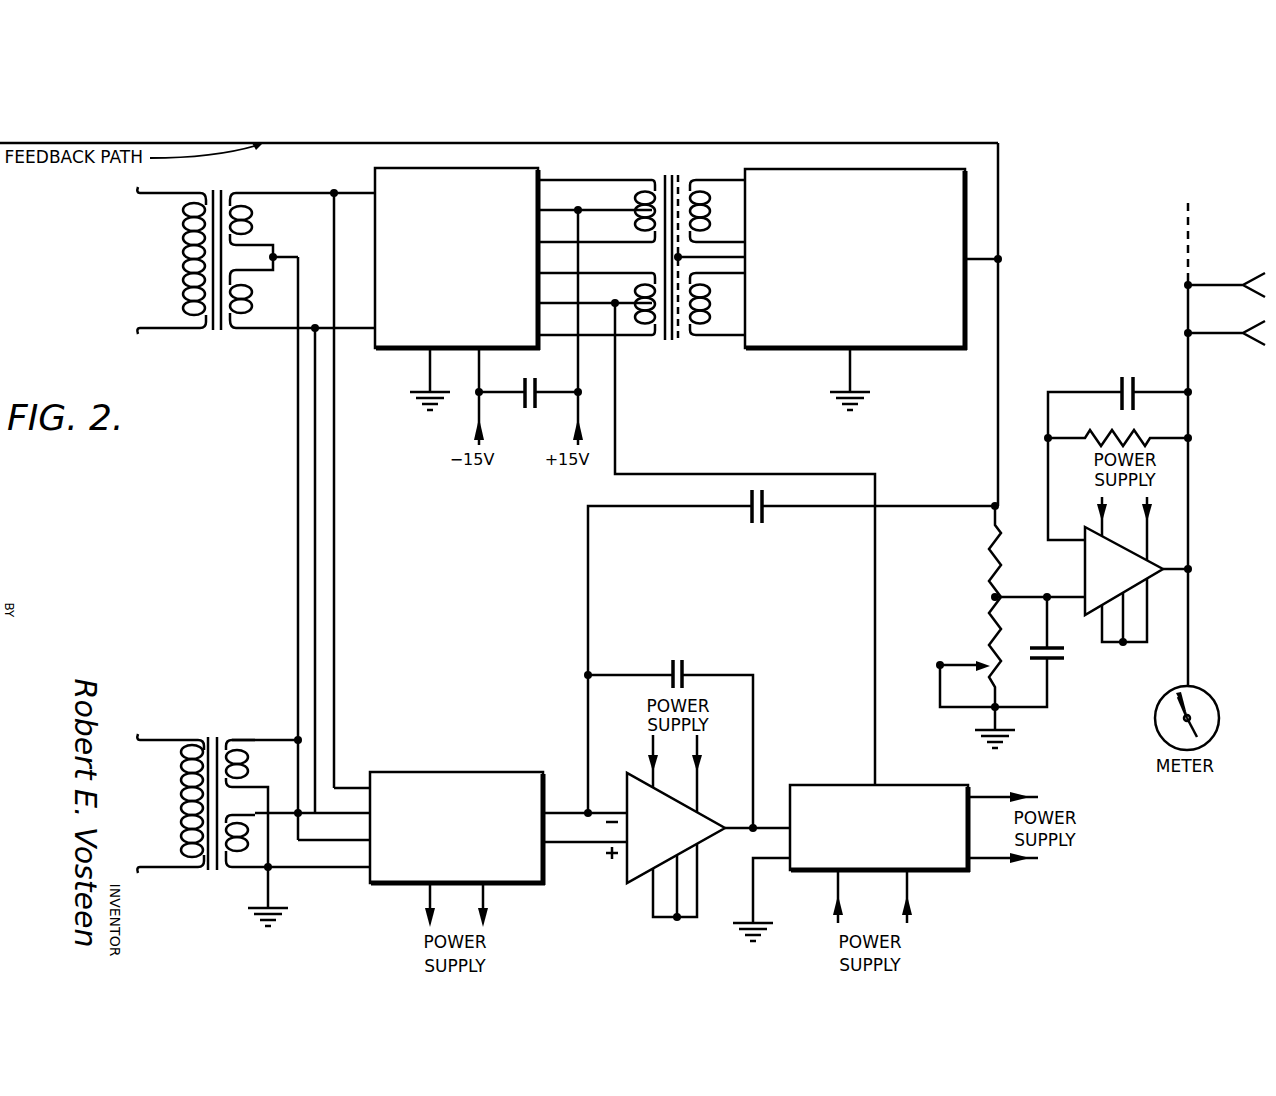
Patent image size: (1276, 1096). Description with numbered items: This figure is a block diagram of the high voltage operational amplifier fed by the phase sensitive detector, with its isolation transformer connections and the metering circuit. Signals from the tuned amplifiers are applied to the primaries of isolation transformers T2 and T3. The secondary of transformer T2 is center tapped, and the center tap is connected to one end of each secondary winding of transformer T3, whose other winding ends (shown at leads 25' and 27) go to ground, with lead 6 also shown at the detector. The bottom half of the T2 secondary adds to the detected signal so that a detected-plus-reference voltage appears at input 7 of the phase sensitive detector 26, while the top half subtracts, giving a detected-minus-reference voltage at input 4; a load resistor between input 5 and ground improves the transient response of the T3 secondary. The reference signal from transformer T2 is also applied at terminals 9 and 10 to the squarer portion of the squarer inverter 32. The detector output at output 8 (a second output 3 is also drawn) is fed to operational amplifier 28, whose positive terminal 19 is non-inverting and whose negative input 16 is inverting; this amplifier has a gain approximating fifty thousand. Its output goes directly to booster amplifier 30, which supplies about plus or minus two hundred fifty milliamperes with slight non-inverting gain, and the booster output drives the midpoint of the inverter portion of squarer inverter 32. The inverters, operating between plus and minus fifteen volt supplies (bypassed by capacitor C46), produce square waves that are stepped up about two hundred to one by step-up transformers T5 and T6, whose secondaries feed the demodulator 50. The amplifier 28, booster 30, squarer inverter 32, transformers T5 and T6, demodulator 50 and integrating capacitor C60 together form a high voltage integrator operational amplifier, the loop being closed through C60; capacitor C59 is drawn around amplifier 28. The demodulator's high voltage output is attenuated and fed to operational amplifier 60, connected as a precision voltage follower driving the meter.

The isolation transformer T2 is at (218, 338).
The terminal 9 is at (363, 191).
The terminal 10 is at (365, 328).
The squarer inverter 32 is at (408, 331).
The power supply capacitor C46 is at (526, 411).
The step-up transformer T5 is at (661, 170).
The step-up transformer T6 is at (673, 352).
The demodulator 50 is at (808, 340).
The operational amplifier 60 is at (1092, 569).
The integrating capacitor C60 is at (748, 514).
The feedback capacitor C59 is at (685, 652).
The isolation transformer T3 is at (213, 720).
The transformer secondary winding lead 25' is at (267, 724).
The transformer secondary winding lead 27 is at (243, 860).
The input 4 is at (363, 787).
The input 7 is at (346, 818).
The input 5 is at (348, 845).
The phase sensitive detector input lead 6 is at (360, 870).
The phase sensitive detector 26 is at (465, 774).
The detector output lead 3 is at (551, 810).
The output 8 is at (552, 847).
The negative input 16 is at (610, 812).
The positive terminal 19 is at (599, 852).
The operational amplifier 28 is at (633, 860).
The booster amplifier 30 is at (893, 789).